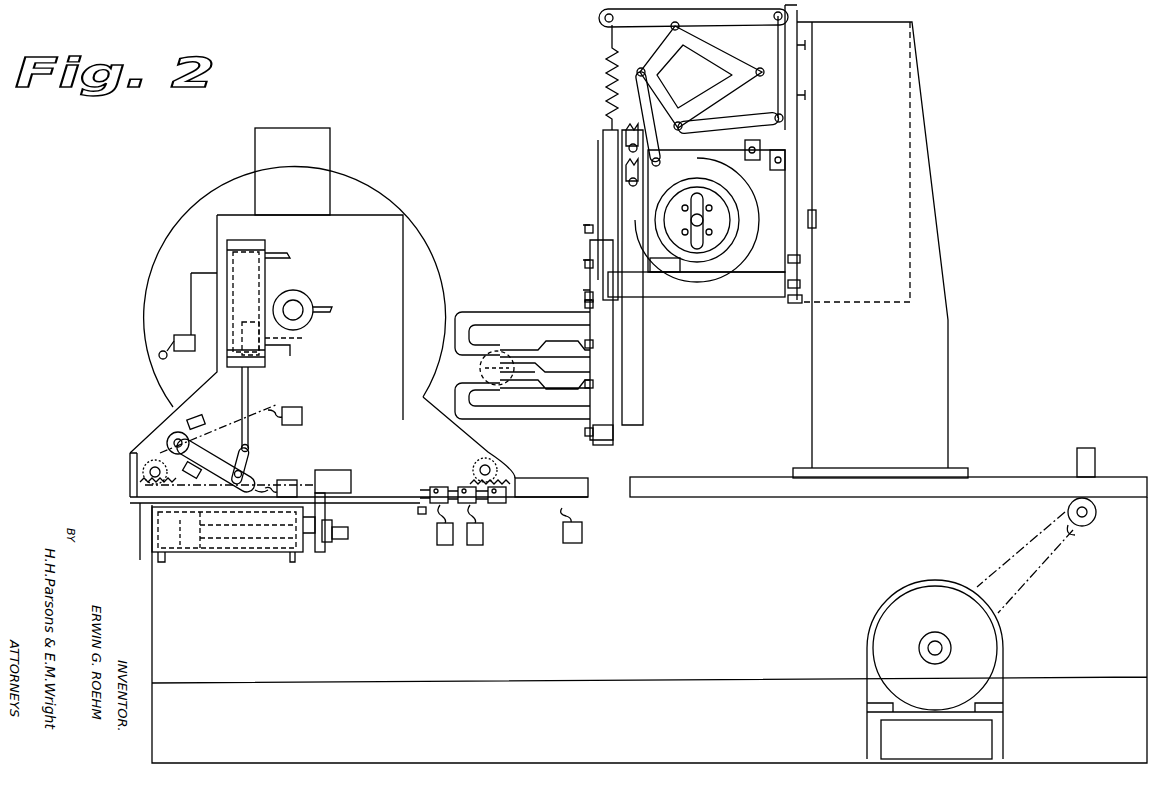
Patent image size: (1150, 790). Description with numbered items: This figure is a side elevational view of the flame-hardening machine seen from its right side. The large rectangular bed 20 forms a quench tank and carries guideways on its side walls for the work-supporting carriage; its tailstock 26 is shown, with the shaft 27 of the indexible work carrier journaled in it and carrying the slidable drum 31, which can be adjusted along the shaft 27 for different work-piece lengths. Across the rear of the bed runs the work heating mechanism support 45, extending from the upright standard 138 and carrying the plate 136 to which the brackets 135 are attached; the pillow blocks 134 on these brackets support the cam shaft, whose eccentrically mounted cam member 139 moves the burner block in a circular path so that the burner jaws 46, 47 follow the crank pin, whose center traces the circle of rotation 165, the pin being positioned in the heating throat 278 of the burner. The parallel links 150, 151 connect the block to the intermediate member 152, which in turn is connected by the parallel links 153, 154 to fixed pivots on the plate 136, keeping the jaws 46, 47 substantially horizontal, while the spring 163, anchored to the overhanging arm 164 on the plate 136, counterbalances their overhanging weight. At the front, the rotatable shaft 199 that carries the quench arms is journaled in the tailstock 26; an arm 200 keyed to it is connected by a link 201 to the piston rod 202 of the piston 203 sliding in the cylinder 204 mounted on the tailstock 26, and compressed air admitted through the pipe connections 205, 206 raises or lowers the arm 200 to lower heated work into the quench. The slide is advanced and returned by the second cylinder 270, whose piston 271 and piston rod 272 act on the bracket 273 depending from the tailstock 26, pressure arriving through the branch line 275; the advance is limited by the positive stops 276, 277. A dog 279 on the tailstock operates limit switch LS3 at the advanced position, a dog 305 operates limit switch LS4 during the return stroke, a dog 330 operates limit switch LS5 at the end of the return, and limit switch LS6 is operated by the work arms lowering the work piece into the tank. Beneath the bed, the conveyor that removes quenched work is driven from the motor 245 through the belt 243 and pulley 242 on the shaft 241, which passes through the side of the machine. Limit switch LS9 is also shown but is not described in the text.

The rectangular bed 20 is at (978, 490).
The tailstock 26 is at (395, 255).
The shaft 27 is at (300, 305).
The second drum 31 is at (410, 222).
The work heating mechanism support 45 is at (932, 165).
The burner jaw 46 is at (522, 325).
The burner jaw 47 is at (528, 405).
The pillow block 134 is at (663, 272).
The bracket 135 is at (750, 297).
The plate 136 is at (808, 192).
The upright standard 138 is at (942, 380).
The eccentrically mounted cam member 139 is at (740, 252).
The parallel link 150 is at (632, 118).
The parallel link 151 is at (750, 86).
The intermediate member 152 is at (730, 55).
The parallel link 153 is at (733, 22).
The parallel link 154 is at (725, 118).
The spring 163 is at (606, 85).
The overhanging arm 164 is at (600, 18).
The circle of rotation 165 is at (492, 352).
The rotatable shaft 199 is at (152, 428).
The arm 200 is at (258, 478).
The link 201 is at (255, 460).
The piston rod 202 is at (250, 395).
The piston 203 is at (302, 340).
The cylinder 204 is at (265, 276).
The pipe connection 205 is at (290, 352).
The pipe connection 206 is at (280, 255).
The shaft 241 is at (1070, 512).
The pulley 242 is at (1075, 530).
The belt 243 is at (1028, 588).
The motor 245 is at (995, 692).
The second cylinder 270 is at (220, 552).
The piston 271 is at (185, 540).
The piston rod 272 is at (262, 540).
The bracket 273 is at (316, 545).
The branch line 275 is at (150, 576).
The positive stop 276 is at (416, 512).
The positive stop 277 is at (332, 525).
The heating throat 278 is at (500, 352).
The dog 279 is at (497, 503).
The dog 305 is at (434, 487).
The dog 330 is at (462, 487).
The limit switch LS3 is at (565, 543).
The limit switch LS4 is at (440, 545).
The limit switch LS5 is at (480, 550).
The limit switch LS6 is at (300, 482).
The limit switch LS9 is at (305, 415).